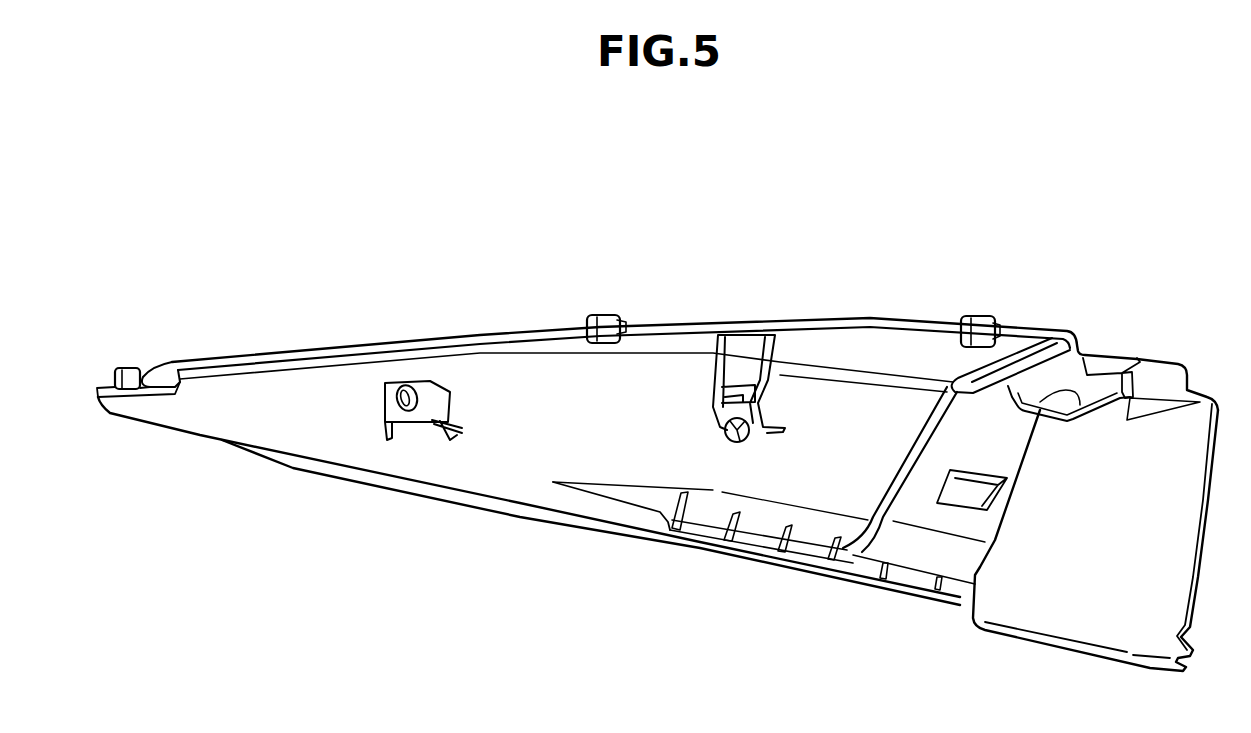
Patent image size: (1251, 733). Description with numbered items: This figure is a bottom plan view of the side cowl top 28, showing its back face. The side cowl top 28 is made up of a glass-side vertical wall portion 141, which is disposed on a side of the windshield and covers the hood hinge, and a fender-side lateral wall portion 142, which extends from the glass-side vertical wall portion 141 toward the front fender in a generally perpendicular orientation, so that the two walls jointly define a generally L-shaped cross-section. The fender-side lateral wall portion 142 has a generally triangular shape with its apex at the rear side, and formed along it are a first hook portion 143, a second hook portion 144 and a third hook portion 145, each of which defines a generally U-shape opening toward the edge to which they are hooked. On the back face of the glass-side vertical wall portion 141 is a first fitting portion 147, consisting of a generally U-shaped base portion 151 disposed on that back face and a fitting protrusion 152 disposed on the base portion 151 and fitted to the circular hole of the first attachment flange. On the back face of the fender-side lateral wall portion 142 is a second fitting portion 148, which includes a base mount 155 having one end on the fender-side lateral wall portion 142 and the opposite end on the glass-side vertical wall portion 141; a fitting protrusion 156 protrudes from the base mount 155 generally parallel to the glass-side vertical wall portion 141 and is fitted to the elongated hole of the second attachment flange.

The side cowl top 28 is at (283, 197).
The glass-side vertical wall portion 141 is at (517, 453).
The fender-side lateral wall portion 142 is at (877, 353).
The first hook portion 143 is at (127, 366).
The second hook portion 144 is at (602, 318).
The third hook portion 145 is at (977, 325).
The first fitting portion 147 is at (276, 378).
The base portion 151 is at (386, 419).
The fitting protrusion 152 is at (392, 401).
The second fitting portion 148 is at (620, 378).
The base mount 155 is at (730, 372).
The fitting protrusion 156 is at (725, 425).